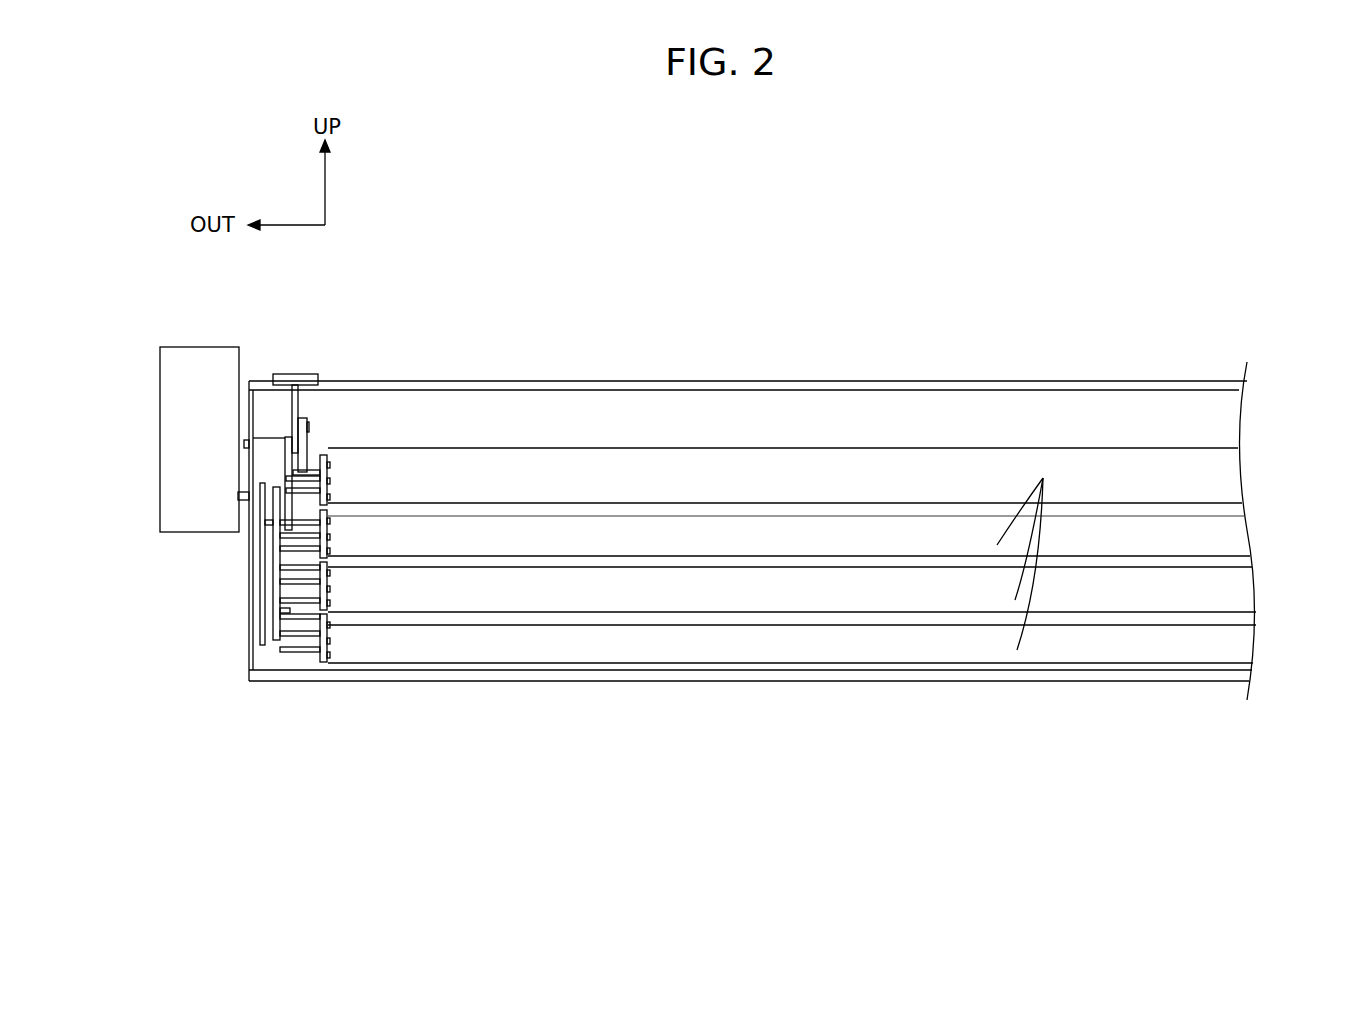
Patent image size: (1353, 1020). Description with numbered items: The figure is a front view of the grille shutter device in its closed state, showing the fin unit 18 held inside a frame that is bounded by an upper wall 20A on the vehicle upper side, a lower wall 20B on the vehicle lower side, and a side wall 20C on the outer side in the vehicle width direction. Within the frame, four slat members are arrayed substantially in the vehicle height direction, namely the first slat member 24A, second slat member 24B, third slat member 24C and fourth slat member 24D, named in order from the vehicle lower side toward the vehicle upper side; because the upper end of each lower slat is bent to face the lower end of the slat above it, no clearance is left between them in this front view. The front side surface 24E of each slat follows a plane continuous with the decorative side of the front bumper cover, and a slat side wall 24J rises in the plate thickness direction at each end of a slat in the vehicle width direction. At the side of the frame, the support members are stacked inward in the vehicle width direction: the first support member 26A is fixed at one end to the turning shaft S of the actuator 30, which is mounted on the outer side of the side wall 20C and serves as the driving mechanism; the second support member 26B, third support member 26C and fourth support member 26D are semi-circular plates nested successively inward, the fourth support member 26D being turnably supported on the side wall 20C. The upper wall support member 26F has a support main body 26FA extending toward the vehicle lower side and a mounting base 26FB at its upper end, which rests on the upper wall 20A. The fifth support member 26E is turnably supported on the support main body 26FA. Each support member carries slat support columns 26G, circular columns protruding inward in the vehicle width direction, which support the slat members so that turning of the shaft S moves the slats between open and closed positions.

The actuator 30 is at (200, 360).
The upper wall 20A is at (704, 386).
The lower wall 20B is at (677, 683).
The side wall 20C is at (248, 632).
The fin unit 18 is at (1257, 534).
The fourth slat member 24D is at (790, 476).
The third slat member 24C is at (790, 541).
The second slat member 24B is at (790, 591).
The first slat member 24A is at (790, 646).
The side surface 24E is at (1007, 472).
The slat side wall 24J is at (335, 548).
The mounting base 26FB is at (283, 372).
The upper wall support member 26F is at (316, 375).
The support main body 26FA is at (300, 402).
The fifth support member 26E is at (308, 445).
The fourth support member 26D is at (335, 552).
The third support member 26C is at (295, 620).
The second support member 26B is at (278, 630).
The first support member 26A is at (268, 648).
The slat support column 26G is at (330, 460).
The turning shaft S is at (268, 500).